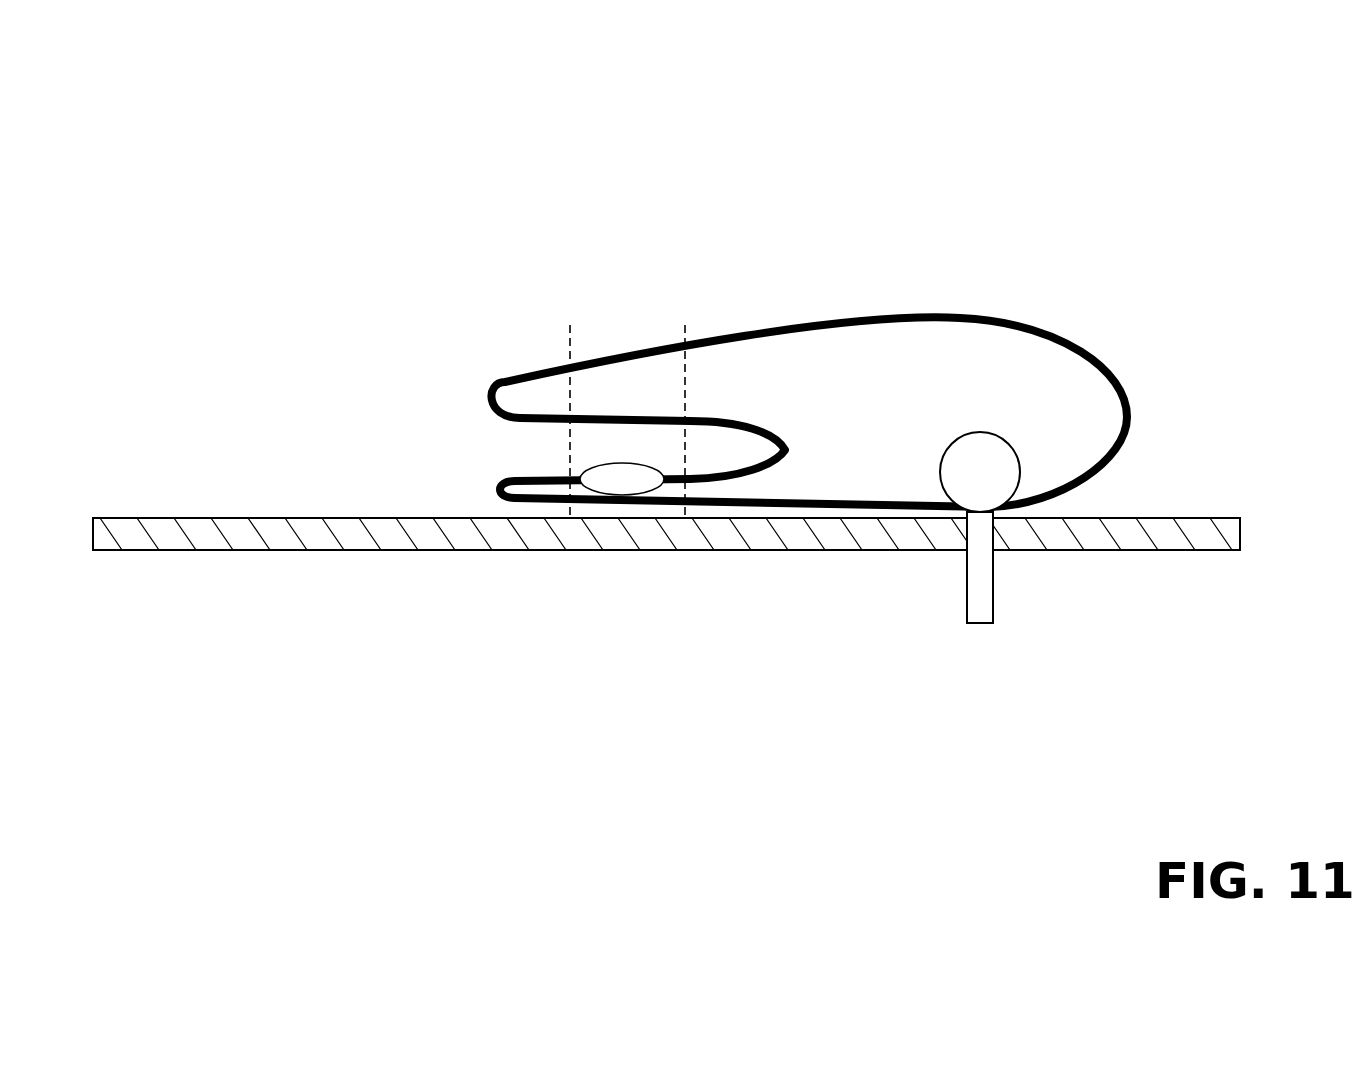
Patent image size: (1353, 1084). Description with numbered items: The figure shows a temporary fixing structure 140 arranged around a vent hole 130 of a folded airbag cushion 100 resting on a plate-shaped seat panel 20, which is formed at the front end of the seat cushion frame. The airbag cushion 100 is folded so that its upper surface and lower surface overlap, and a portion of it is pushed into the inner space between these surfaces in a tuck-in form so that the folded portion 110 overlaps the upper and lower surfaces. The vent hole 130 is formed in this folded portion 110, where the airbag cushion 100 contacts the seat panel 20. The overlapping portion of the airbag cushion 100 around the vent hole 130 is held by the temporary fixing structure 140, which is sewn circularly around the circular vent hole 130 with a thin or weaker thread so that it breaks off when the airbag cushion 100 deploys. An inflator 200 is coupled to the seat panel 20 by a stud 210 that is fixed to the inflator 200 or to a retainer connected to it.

The seat panel 20 is at (358, 540).
The airbag cushion 100 is at (885, 313).
The folded portion 110 is at (662, 301).
The vent hole 130 is at (622, 482).
The temporary fixing structure 140 is at (685, 325).
The inflator 200 is at (993, 453).
The stud 210 is at (975, 600).